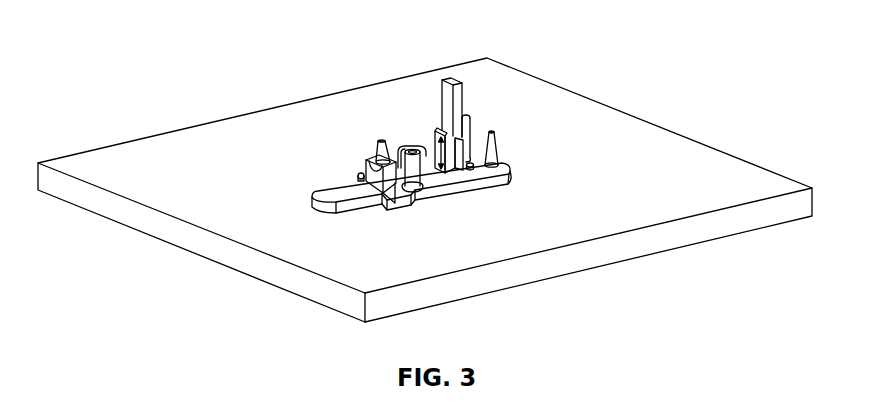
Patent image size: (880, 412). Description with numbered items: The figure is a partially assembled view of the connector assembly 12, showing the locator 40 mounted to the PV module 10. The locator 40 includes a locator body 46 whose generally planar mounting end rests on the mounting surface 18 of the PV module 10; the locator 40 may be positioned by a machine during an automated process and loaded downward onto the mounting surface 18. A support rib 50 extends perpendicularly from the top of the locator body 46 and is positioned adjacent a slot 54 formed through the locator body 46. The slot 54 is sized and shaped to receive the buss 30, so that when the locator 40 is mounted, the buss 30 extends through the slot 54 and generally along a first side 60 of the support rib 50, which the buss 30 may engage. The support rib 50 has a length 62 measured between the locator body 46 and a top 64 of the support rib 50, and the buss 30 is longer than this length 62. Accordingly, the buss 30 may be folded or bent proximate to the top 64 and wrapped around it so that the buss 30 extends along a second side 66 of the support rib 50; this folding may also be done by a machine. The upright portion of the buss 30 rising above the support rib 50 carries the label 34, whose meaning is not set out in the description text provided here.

The PV module 10 is at (209, 72).
The connector assembly 12 is at (386, 101).
The mounting surface 18 is at (674, 157).
The buss 30 is at (452, 98).
The blade tip 34 is at (444, 101).
The locator 40 is at (331, 192).
The locator body 46 is at (354, 185).
The support rib 50 is at (462, 173).
The slot 54 is at (473, 164).
The first side 60 is at (472, 145).
The length 62 is at (424, 146).
The top 64 is at (436, 132).
The second side 66 is at (448, 171).